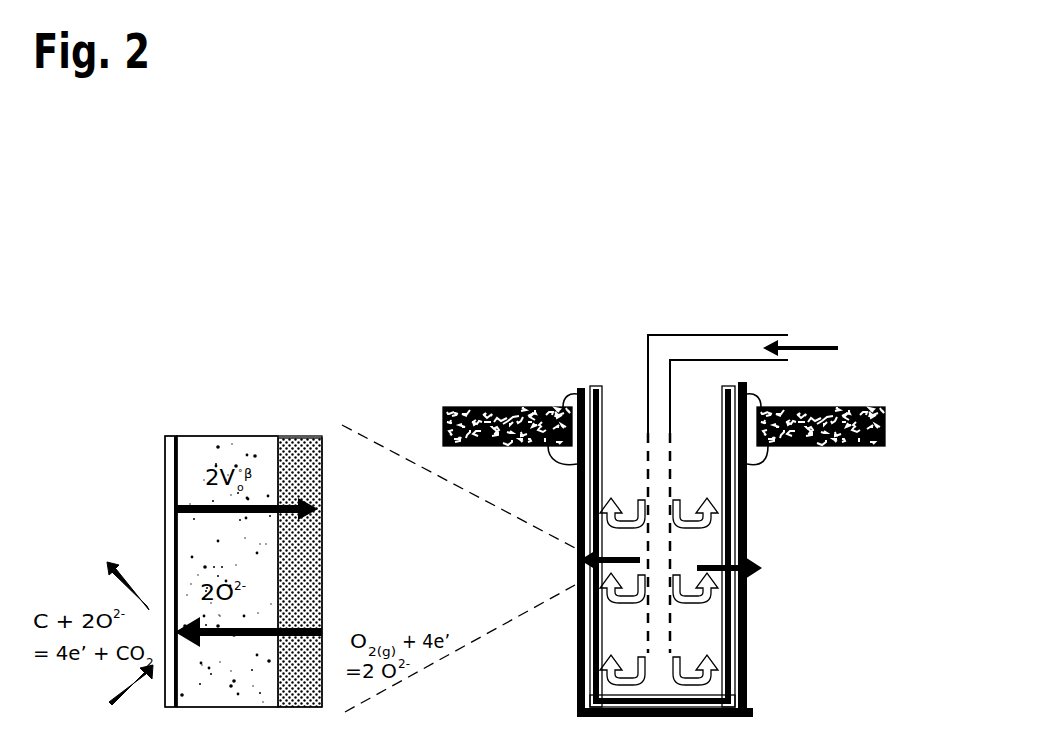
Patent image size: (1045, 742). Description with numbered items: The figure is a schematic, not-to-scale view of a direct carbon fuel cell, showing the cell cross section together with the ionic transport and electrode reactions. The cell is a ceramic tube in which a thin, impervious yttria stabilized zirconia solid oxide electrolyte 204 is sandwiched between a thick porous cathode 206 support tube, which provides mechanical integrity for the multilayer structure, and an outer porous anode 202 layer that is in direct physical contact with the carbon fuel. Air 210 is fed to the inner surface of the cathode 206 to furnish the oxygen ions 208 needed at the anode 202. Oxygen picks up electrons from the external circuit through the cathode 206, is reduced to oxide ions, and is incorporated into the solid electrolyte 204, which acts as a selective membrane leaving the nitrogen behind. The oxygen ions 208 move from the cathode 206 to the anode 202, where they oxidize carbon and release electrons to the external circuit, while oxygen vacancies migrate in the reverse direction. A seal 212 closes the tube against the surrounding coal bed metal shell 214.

The anode 202 is at (805, 647).
The solid oxide electrolyte 204 is at (200, 432).
The cathode 206 is at (294, 420).
The oxygen ions 208 is at (752, 583).
The air 210 is at (743, 469).
The seal 212 is at (812, 472).
The metal shell 214 is at (922, 458).